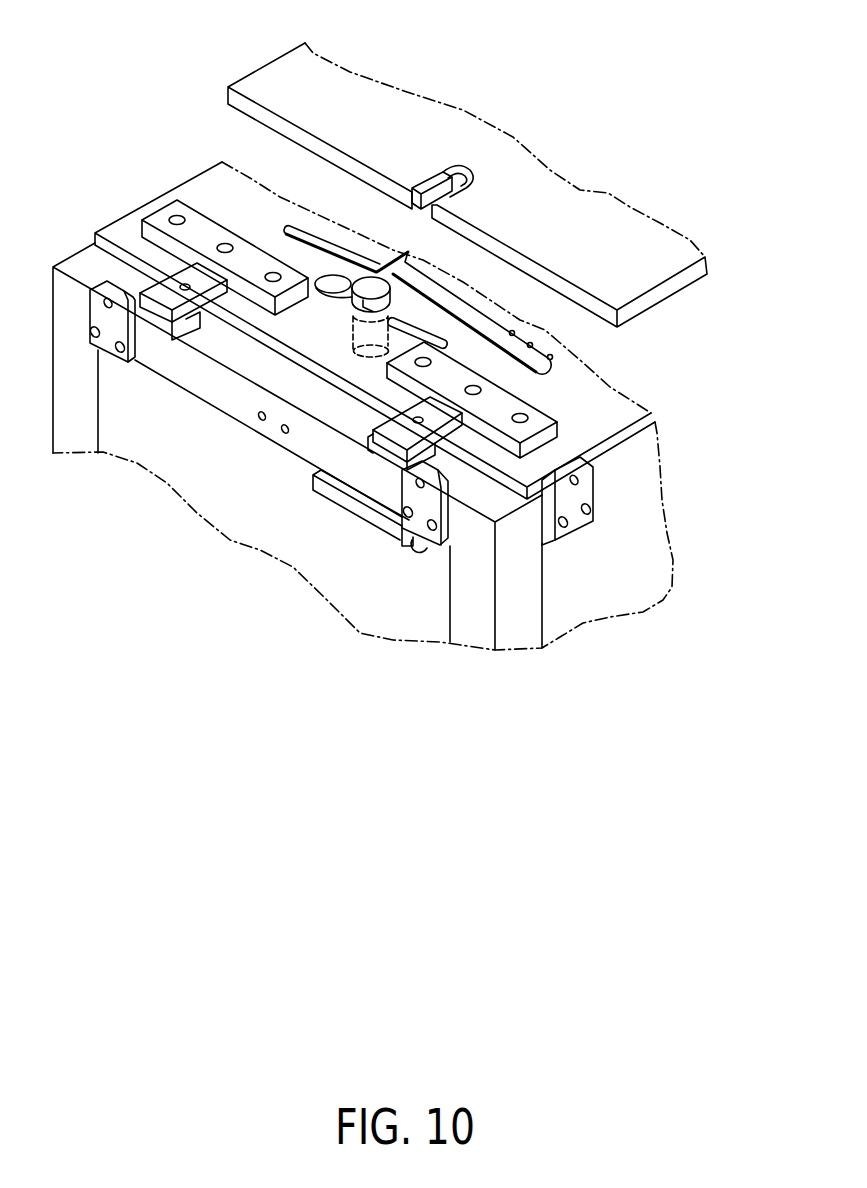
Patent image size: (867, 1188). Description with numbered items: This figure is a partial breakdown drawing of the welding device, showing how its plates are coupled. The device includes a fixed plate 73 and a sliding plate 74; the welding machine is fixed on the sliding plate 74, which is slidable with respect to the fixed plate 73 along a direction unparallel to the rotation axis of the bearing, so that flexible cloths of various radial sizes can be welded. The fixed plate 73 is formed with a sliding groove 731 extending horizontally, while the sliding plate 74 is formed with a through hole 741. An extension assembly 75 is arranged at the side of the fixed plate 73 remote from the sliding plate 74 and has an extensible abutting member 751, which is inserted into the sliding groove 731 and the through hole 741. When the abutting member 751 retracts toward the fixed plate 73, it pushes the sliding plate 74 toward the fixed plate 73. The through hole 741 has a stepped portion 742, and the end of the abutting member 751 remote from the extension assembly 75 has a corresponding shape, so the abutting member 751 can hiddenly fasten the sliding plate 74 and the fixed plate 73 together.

The fixed plate 73 is at (588, 402).
The sliding groove 731 is at (422, 330).
The sliding plate 74 is at (553, 186).
The through hole 741 is at (438, 196).
The stepped portion 742 is at (424, 188).
The extension assembly 75 is at (366, 345).
The abutting member 751 is at (362, 300).